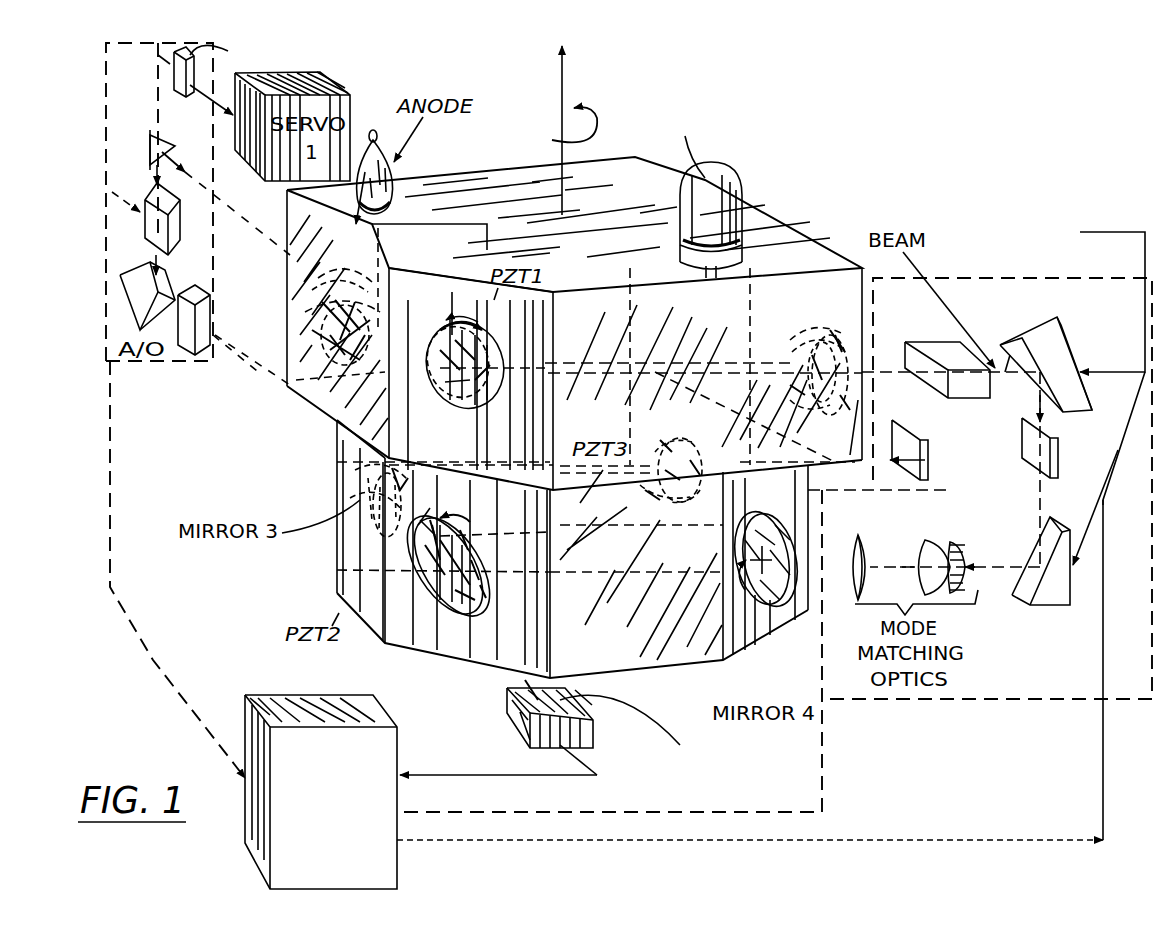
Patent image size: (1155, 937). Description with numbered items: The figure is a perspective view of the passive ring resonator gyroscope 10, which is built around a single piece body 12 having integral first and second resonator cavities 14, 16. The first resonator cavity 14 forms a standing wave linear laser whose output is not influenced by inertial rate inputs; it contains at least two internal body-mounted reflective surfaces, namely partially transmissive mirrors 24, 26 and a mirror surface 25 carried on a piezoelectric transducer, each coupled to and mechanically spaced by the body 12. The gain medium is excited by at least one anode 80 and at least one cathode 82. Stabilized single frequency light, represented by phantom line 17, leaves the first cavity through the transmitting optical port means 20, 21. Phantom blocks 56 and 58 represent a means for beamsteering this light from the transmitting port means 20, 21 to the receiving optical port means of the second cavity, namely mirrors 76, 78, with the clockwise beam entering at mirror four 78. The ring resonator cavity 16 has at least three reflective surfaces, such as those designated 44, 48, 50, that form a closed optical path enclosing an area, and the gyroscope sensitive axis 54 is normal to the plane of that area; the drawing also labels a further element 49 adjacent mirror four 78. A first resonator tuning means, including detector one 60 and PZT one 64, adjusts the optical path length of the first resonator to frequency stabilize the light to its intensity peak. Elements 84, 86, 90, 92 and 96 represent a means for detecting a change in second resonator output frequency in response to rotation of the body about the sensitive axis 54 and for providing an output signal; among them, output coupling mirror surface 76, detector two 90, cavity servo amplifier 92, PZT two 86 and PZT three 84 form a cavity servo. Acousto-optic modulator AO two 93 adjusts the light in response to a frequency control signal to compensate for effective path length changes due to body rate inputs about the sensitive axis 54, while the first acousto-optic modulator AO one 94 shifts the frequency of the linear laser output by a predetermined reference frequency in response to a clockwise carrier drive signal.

The ring laser gyroscope 10 is at (785, 125).
The single piece body 12 is at (610, 188).
The first resonator cavity 14 is at (398, 295).
The second resonator cavity 16 is at (587, 598).
The phantom line 17 is at (1015, 376).
The transmitting optical port means 20 is at (847, 417).
The transmitting optical port means 21 is at (335, 270).
The partially transmissive mirror 24 is at (830, 330).
The mirror surface on piezoelectric transducer 25 is at (495, 345).
The partially transmissive mirror 26 is at (345, 330).
The reflective surface 44 is at (670, 478).
The reflective surface 48 is at (470, 540).
The mirror 4 adjustment 49 is at (740, 585).
The reflective surface 50 is at (397, 473).
The sensitive axis 54 is at (563, 72).
The phantom block 56 is at (150, 362).
The phantom block 58 is at (1010, 312).
The DETECTOR 1 60 is at (176, 86).
The PZT 1 64 is at (440, 360).
The mirror 76 is at (364, 480).
The MIRROR 4 78 is at (773, 612).
The anode 80 is at (390, 132).
The cathode 82 is at (686, 253).
The PZT 3 84 is at (705, 480).
The PZT 2 86 is at (475, 540).
The DETECTOR 2 90 is at (910, 430).
The cavity servo amplifier 92 is at (345, 700).
The AO2 93 is at (170, 238).
The first acousto-optic modulator AO1 94 is at (1052, 472).
The frequency change detecting means element 96 is at (520, 705).